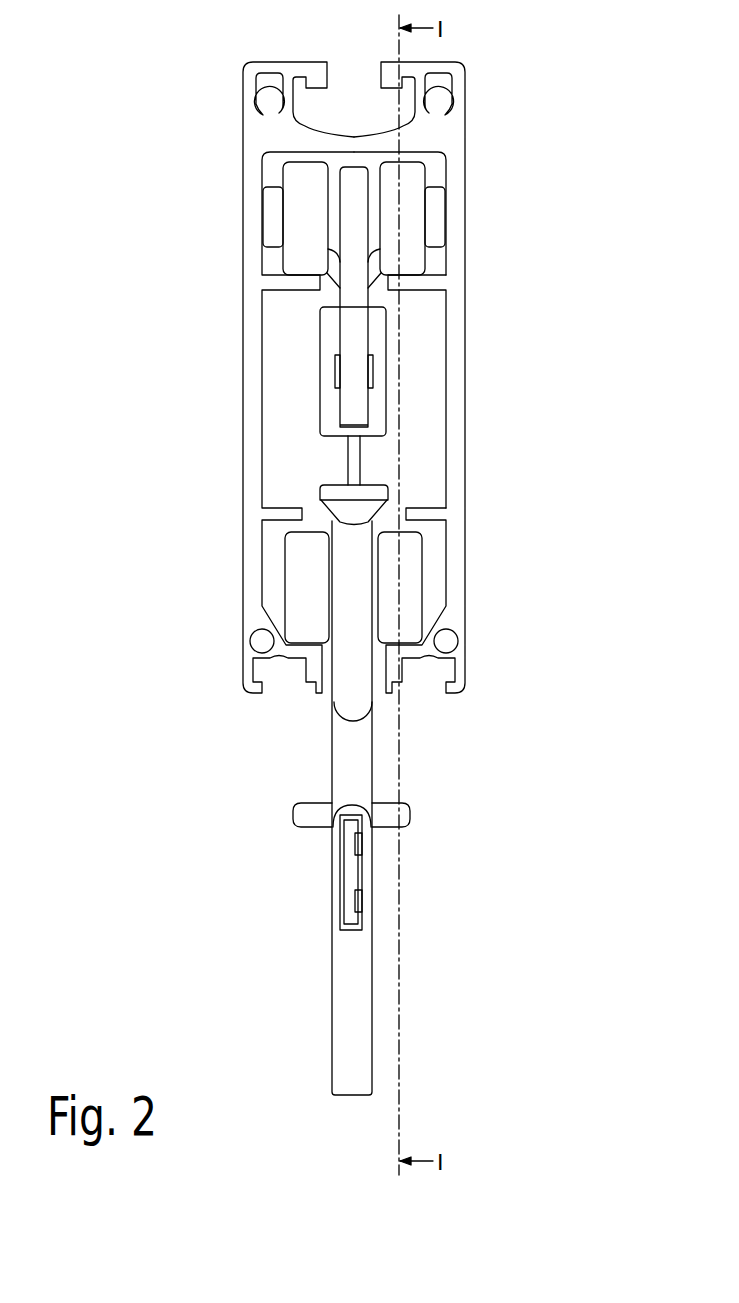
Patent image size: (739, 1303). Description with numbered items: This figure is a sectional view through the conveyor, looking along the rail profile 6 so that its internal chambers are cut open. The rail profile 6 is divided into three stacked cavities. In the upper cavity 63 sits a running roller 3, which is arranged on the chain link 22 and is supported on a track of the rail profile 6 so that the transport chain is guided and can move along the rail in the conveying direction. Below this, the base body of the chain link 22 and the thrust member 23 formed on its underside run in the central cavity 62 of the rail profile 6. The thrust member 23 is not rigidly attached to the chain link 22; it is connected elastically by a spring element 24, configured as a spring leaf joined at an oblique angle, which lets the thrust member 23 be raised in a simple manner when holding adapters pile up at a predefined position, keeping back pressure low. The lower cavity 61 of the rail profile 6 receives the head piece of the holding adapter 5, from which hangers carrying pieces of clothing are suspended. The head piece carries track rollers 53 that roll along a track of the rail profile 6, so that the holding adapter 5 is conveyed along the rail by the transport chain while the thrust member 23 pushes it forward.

The running roller 3 is at (305, 243).
The holding adapter 5 is at (310, 1013).
The rail profile 6 is at (243, 412).
The chain link 22 is at (330, 361).
The thrust member 23 is at (357, 500).
The spring element 24 is at (355, 472).
The track roller 53 is at (308, 605).
The lower cavity 61 is at (432, 590).
The central cavity 62 is at (430, 422).
The upper cavity 63 is at (433, 177).